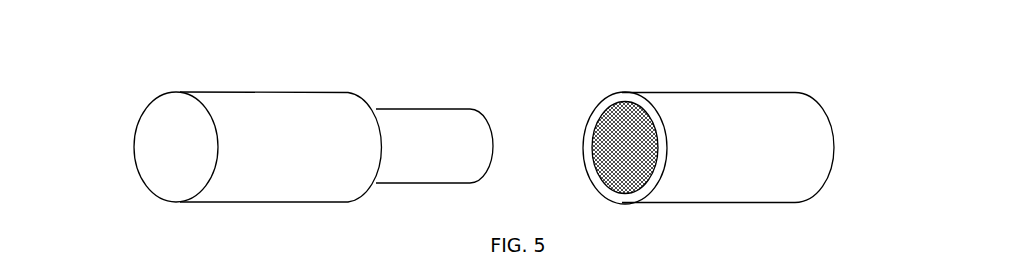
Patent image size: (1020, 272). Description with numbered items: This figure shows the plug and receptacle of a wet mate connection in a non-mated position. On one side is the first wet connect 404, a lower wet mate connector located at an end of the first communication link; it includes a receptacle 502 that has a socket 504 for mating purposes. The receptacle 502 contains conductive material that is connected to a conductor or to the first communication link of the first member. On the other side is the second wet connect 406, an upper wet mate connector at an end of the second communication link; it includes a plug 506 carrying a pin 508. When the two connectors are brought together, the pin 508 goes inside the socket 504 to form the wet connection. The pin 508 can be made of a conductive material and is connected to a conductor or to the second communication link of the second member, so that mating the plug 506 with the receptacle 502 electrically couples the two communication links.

The first wet connect 404 is at (892, 86).
The second wet connect 406 is at (115, 80).
The receptacle 502 is at (708, 92).
The socket 504 is at (600, 113).
The plug 506 is at (260, 92).
The pin 508 is at (407, 108).